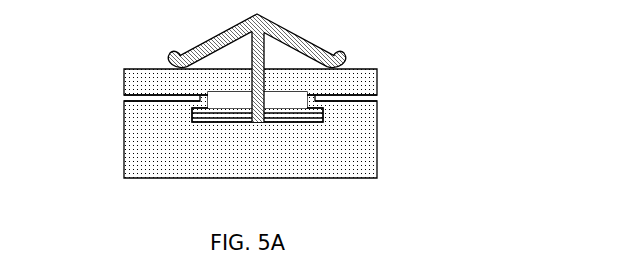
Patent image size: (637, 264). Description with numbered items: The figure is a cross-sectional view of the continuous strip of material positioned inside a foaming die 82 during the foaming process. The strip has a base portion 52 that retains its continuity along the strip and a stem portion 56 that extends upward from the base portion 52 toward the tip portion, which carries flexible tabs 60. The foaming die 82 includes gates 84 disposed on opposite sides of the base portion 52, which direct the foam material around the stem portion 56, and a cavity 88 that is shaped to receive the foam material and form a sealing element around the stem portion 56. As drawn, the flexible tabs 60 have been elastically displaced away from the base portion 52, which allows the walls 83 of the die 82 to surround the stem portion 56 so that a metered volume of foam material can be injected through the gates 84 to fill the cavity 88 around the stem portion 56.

The base portion 52 is at (326, 111).
The stem portion 56 is at (250, 93).
The flexible tab 60 is at (232, 27).
The foaming die 82 is at (137, 144).
The walls 83 is at (225, 78).
The gates 84 is at (132, 97).
The cavity 88 is at (218, 97).